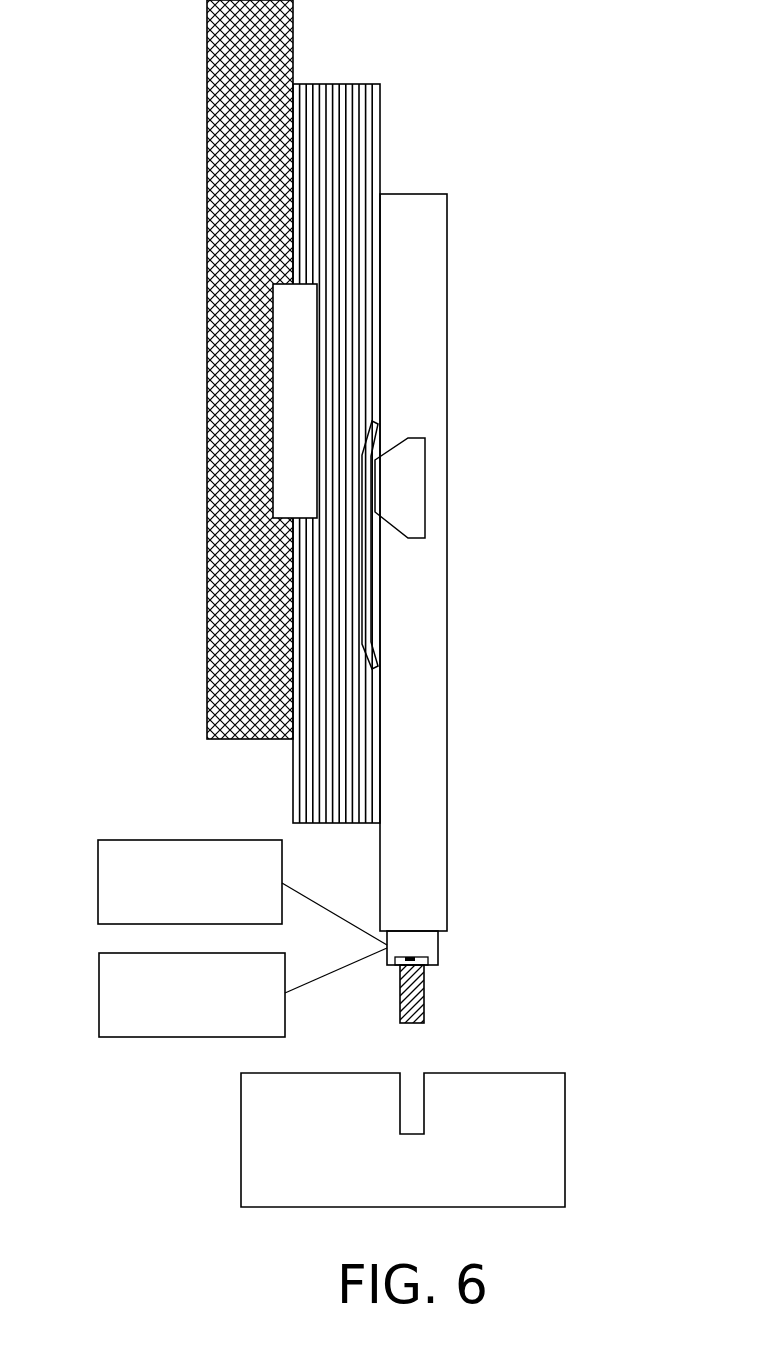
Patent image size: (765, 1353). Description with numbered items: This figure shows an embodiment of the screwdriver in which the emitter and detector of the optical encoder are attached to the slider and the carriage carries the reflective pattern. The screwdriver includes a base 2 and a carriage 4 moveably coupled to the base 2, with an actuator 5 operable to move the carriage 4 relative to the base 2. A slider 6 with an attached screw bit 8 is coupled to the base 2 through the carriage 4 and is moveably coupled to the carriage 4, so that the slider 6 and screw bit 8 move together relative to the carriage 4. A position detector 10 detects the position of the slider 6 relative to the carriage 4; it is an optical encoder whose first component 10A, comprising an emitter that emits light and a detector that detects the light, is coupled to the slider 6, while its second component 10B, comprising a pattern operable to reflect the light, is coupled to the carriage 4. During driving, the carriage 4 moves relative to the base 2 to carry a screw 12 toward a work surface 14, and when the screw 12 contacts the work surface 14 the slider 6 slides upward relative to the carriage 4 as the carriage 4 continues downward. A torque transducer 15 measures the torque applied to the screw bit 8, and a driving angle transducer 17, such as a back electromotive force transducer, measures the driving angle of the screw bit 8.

The base 2 is at (208, 38).
The carriage 4 is at (380, 110).
The actuator 5 is at (258, 271).
The slider 6 is at (447, 237).
The screw bit 8 is at (438, 943).
The position detector 10 is at (444, 491).
The first component 10A is at (421, 497).
The second component 10B is at (367, 585).
The screw 12 is at (425, 990).
The work surface 14 is at (565, 1098).
The torque transducer 15 is at (98, 876).
The driving angle transducer 17 is at (99, 990).